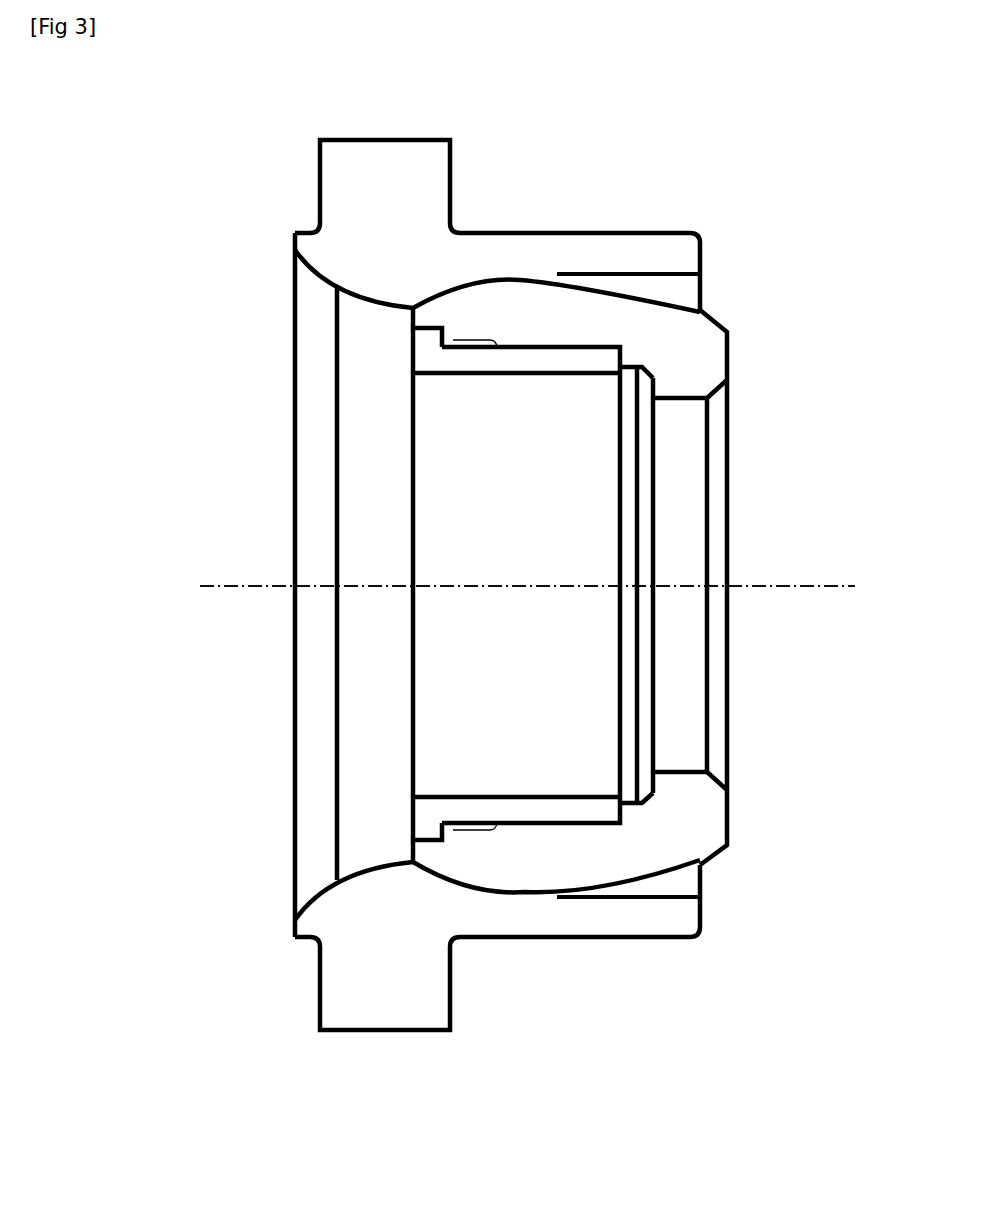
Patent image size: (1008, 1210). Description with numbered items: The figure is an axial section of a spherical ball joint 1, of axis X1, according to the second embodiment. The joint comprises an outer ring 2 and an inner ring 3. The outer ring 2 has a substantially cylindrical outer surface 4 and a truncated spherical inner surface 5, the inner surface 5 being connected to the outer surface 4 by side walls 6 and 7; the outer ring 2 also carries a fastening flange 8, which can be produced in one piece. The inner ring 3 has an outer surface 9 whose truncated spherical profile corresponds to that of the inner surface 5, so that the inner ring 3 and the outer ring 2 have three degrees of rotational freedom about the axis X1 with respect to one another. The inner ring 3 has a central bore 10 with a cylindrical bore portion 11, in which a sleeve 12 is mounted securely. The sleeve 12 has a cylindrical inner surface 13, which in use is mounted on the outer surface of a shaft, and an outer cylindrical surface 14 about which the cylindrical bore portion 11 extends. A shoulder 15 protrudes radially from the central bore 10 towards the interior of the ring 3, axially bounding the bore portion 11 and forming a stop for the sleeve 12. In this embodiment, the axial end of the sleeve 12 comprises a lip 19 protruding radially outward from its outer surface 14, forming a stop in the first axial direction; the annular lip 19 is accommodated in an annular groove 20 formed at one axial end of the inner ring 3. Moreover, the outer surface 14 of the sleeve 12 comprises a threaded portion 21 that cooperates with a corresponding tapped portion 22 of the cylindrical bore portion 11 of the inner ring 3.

The spherical ball joint 1 is at (203, 163).
The outer ring 2 is at (701, 918).
The inner ring 3 is at (728, 826).
The outer surface 4 is at (603, 233).
The inner surface 5 is at (533, 283).
The side wall 6 is at (700, 253).
The side wall 7 is at (302, 897).
The fastening flange 8 is at (337, 993).
The outer surface 9 is at (498, 282).
The central bore 10 is at (685, 402).
The cylindrical bore portion 11 is at (525, 823).
The sleeve 12 is at (412, 803).
The cylindrical inner surface 13 is at (538, 797).
The outer cylindrical surface 14 is at (677, 872).
The shoulder 15 is at (625, 357).
The lip 19 is at (425, 830).
The annular groove 20 is at (422, 336).
The threaded portion 21 is at (483, 340).
The tapped portion 22 is at (453, 340).
The axis X1 is at (527, 568).